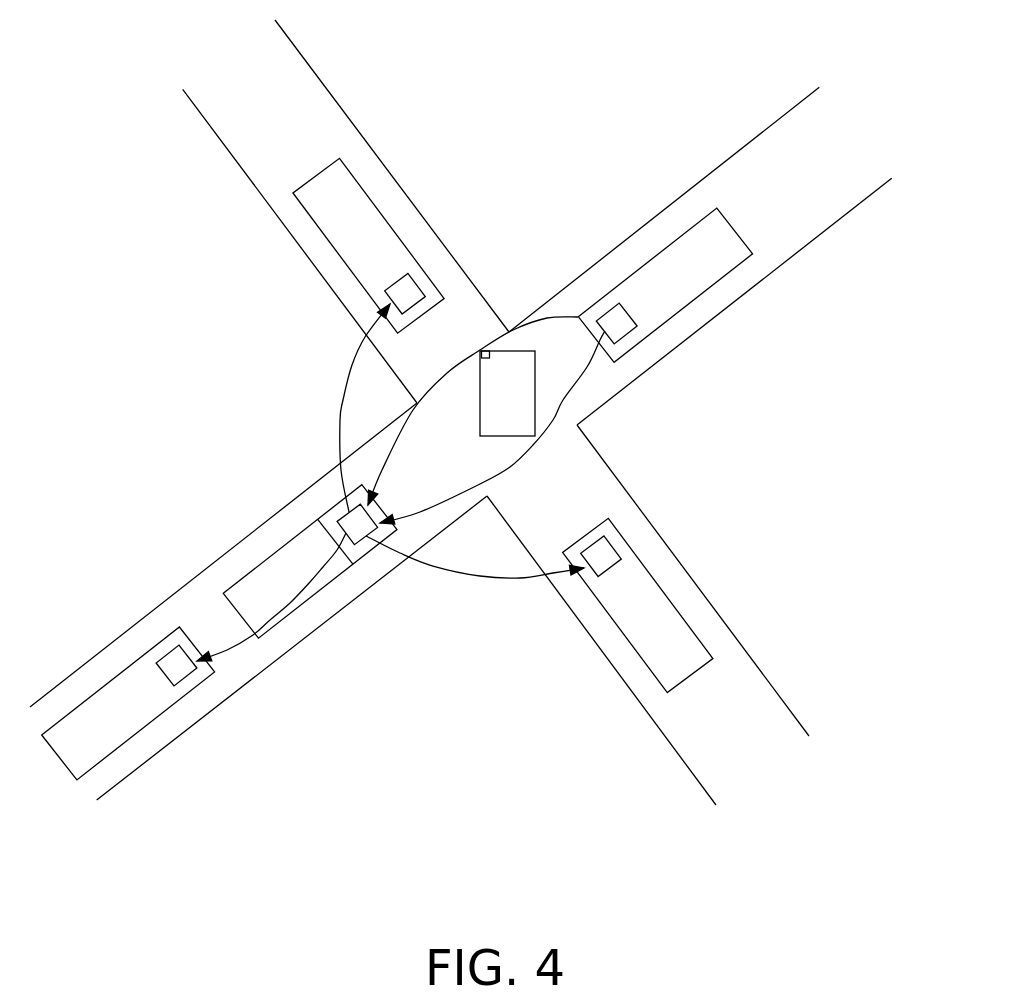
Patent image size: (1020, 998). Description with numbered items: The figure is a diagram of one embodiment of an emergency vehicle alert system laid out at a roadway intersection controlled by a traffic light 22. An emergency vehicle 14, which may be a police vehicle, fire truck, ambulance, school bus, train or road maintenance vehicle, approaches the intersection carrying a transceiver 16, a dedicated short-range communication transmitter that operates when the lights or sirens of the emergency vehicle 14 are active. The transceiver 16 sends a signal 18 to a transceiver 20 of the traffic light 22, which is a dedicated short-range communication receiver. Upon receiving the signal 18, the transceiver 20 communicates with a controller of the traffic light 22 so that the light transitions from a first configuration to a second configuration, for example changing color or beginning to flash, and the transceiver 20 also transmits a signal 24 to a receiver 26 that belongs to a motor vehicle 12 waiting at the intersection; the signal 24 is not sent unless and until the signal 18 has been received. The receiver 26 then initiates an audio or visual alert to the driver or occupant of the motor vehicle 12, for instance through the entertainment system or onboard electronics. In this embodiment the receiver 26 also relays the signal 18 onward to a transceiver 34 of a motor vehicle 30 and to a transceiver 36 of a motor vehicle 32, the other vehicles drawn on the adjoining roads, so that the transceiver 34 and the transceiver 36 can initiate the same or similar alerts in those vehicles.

The motor vehicle 12 is at (288, 531).
The emergency vehicle 14 is at (687, 227).
The transceiver 16 is at (626, 335).
The signal 18 is at (550, 305).
The transceiver 20 is at (482, 351).
The traffic light 22 is at (542, 371).
The signal 24 is at (441, 372).
The receiver 26 is at (351, 543).
The motor vehicle 30 is at (360, 173).
The motor vehicle 32 is at (666, 591).
The transceiver 34 is at (419, 286).
The transceiver 36 is at (613, 548).